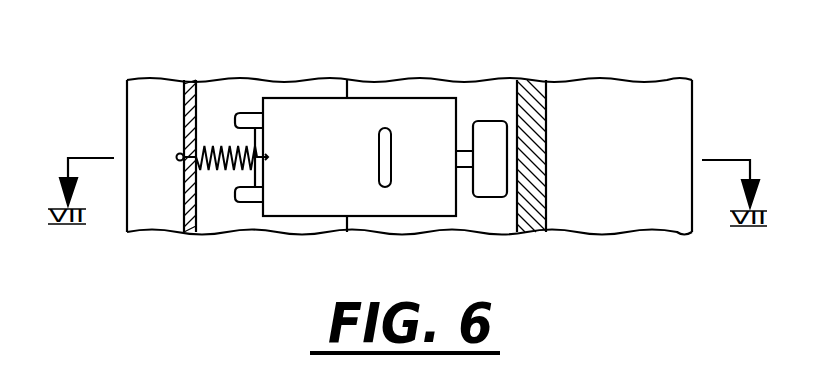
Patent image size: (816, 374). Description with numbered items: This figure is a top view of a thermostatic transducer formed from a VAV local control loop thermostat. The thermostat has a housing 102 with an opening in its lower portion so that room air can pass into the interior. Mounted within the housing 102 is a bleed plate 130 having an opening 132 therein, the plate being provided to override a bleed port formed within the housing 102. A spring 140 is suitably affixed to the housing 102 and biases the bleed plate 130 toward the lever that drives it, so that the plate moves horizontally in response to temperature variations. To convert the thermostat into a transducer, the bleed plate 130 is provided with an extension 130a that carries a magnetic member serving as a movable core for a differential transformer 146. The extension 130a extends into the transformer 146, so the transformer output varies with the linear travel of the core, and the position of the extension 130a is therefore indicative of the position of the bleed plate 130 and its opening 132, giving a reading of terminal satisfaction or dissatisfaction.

The housing 102 is at (183, 137).
The spring 140 is at (225, 140).
The bleed plate 130 is at (290, 110).
The opening 132 is at (385, 137).
The extension 130a is at (462, 147).
The differential transformer 146 is at (490, 118).